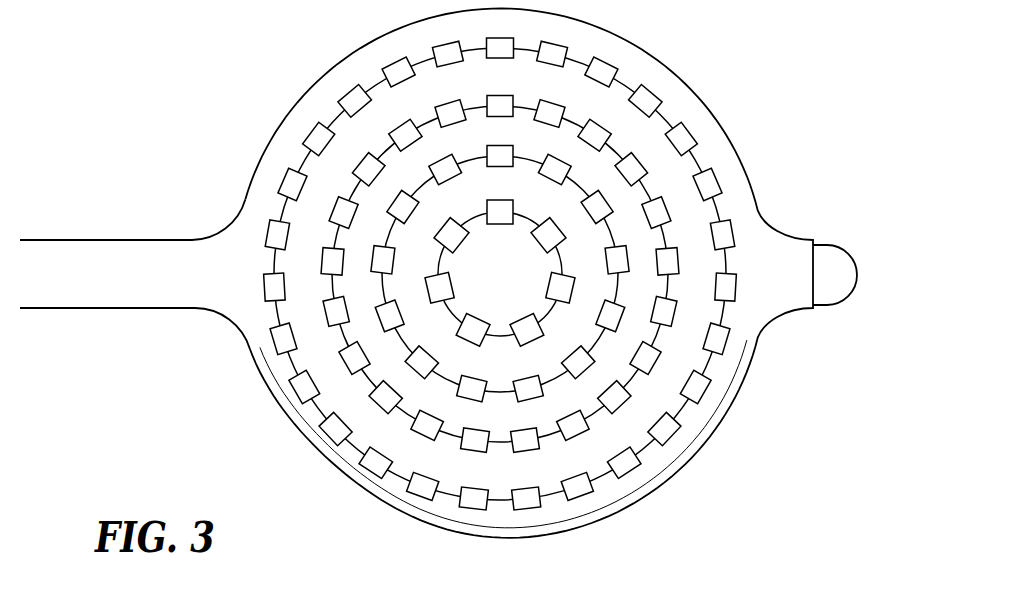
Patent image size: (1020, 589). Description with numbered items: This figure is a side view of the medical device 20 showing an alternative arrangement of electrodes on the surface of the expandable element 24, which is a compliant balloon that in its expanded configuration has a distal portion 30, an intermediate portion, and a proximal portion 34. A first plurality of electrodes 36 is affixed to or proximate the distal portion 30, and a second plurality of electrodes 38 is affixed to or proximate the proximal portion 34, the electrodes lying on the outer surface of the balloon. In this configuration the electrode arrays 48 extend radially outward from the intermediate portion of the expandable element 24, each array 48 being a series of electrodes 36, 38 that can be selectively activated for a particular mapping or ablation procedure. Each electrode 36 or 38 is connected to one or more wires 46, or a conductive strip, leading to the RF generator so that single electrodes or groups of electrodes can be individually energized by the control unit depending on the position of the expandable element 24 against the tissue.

The ultrasound device 20 is at (438, 273).
The expandable element 24 is at (758, 345).
The distal portion 30 is at (247, 353).
The proximal portion 34 is at (743, 160).
The first plurality of electrodes 36 is at (733, 228).
The second plurality of electrodes 38 is at (508, 224).
The wires 46 is at (672, 120).
The electrode array 48 is at (628, 82).